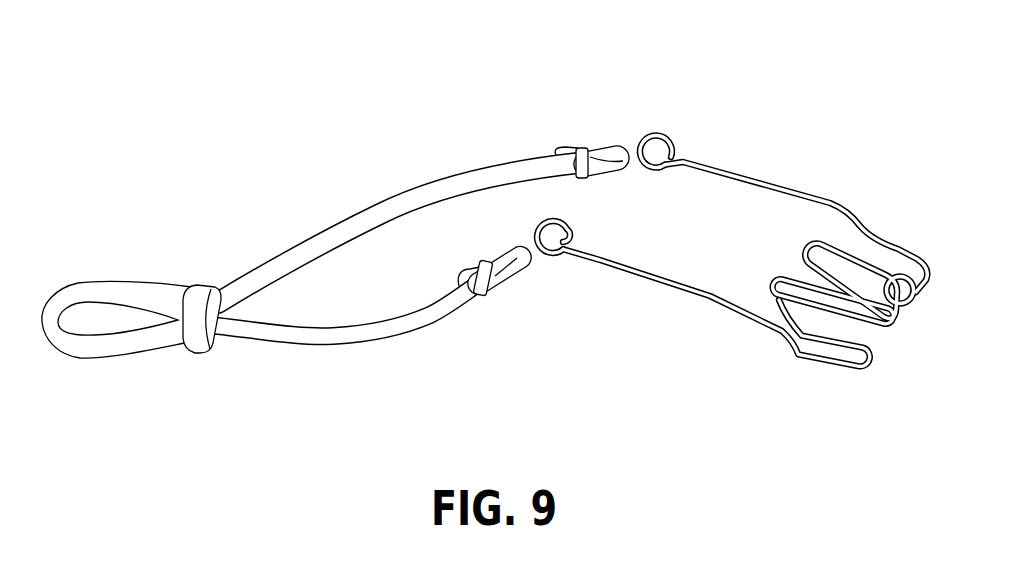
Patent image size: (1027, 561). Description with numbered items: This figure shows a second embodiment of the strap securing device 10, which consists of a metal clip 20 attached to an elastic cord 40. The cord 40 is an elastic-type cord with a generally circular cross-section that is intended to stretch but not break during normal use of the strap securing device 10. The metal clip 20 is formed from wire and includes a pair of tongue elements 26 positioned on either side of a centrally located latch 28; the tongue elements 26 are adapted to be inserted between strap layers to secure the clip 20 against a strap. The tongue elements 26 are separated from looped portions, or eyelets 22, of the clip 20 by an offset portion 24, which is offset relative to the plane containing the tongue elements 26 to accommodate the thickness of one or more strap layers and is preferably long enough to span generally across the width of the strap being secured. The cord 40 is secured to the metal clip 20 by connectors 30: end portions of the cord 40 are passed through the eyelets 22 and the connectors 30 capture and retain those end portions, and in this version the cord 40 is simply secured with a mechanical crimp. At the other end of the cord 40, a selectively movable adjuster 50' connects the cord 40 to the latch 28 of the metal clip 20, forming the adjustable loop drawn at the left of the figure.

The strap securing device 10 is at (507, 56).
The metal clip 20 is at (743, 238).
The looped portions (eyelets) 22 is at (660, 134).
The offset portion 24 is at (710, 174).
The tongue elements 26 is at (810, 243).
The latch 28 is at (917, 302).
The connector 30 is at (586, 147).
The elastic cord 40 is at (363, 210).
The knot ring 50' is at (227, 342).